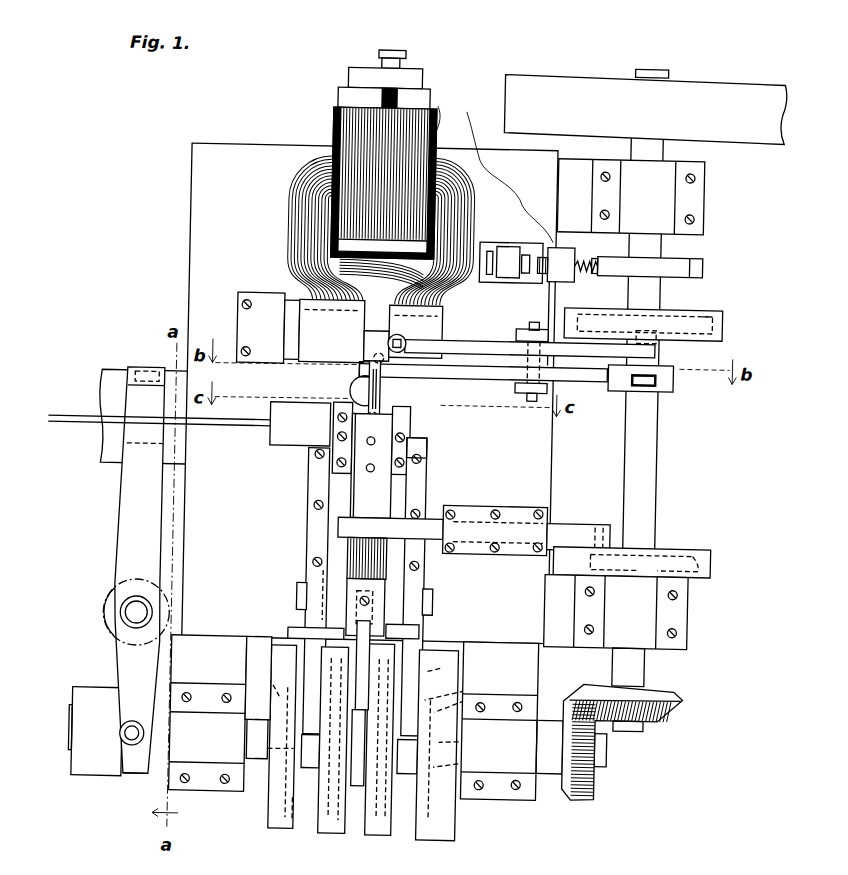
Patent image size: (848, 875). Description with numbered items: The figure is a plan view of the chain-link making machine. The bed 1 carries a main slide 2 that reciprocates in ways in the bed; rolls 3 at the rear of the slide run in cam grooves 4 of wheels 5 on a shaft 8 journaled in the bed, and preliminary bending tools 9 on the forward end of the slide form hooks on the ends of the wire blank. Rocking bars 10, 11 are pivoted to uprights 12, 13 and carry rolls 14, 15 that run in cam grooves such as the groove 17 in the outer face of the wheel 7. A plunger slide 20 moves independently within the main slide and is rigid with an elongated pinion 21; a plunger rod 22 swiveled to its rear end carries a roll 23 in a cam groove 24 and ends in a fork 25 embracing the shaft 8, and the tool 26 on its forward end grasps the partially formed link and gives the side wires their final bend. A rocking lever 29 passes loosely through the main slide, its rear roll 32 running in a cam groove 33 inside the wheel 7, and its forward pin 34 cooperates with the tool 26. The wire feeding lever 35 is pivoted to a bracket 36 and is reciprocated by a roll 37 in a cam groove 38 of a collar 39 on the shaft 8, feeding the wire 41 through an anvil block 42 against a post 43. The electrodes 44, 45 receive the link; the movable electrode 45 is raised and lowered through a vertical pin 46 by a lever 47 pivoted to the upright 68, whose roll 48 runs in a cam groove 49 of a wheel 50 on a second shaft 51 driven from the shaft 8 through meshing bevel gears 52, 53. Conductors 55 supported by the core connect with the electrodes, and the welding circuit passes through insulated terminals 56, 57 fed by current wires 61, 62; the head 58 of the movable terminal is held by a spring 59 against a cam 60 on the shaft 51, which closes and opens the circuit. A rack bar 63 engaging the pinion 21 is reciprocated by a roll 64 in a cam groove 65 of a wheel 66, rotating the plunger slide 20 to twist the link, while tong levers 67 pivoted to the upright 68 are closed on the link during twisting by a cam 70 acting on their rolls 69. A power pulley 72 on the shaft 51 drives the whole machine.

The bed 1 is at (186, 221).
The main slide 2 is at (309, 497).
The rolls 3 is at (513, 693).
The cam grooves 4 is at (258, 752).
The wheels 5 is at (363, 743).
The wheel 7 is at (322, 832).
The shaft 8 is at (634, 770).
The preliminary bending tools 9 is at (338, 455).
The rocking bar 10 is at (394, 632).
The rocking bar 11 is at (292, 634).
The upright 12 is at (437, 599).
The upright 13 is at (300, 590).
The roll 14 is at (465, 741).
The roll 15 is at (280, 826).
The cam groove 17 is at (300, 822).
The plunger slide 20 is at (441, 582).
The elongated pinion 21 is at (350, 559).
The plunger rod 22 is at (376, 665).
The roll 23 is at (470, 690).
The cam groove 24 is at (445, 668).
The fork 25 is at (369, 787).
The tool 26 is at (370, 454).
The rocking lever 29 is at (357, 412).
The roll 32 is at (380, 826).
The cam groove 33 is at (346, 830).
The vertically disposed pin 34 is at (380, 412).
The wire feeding lever 35 is at (137, 569).
The bracket 36 is at (124, 615).
The roll 37 is at (130, 777).
The cam groove 38 is at (137, 779).
The collar 39 is at (95, 731).
The wire 41 is at (151, 408).
The anvil block 42 is at (300, 424).
The post 43 is at (428, 441).
The electrode 44 is at (313, 328).
The electrode 45 is at (416, 331).
The vertical pin 46 is at (405, 340).
The lever 47 is at (485, 341).
The roll 48 is at (656, 335).
The cam groove 49 is at (711, 310).
The wheel 50 is at (677, 306).
The shaft 51 is at (658, 440).
The bevel gear 52 is at (592, 790).
The bevel gear 53 is at (686, 695).
The electrical conductors 55 is at (284, 226).
The insulated terminal 56 is at (509, 245).
The insulated terminal 57 is at (549, 281).
The head 58 is at (590, 270).
The spring 59 is at (589, 256).
The cam 60 is at (697, 257).
The current wire 61 is at (445, 118).
The current wire 62 is at (510, 167).
The rack bar 63 is at (474, 530).
The roll 64 is at (662, 551).
The cam groove 65 is at (700, 558).
The wheel 66 is at (713, 561).
The tong levers 67 is at (463, 379).
The upright 68 is at (529, 325).
The rolls 69 is at (655, 382).
The cam 70 is at (672, 376).
The power pulley 72 is at (645, 106).